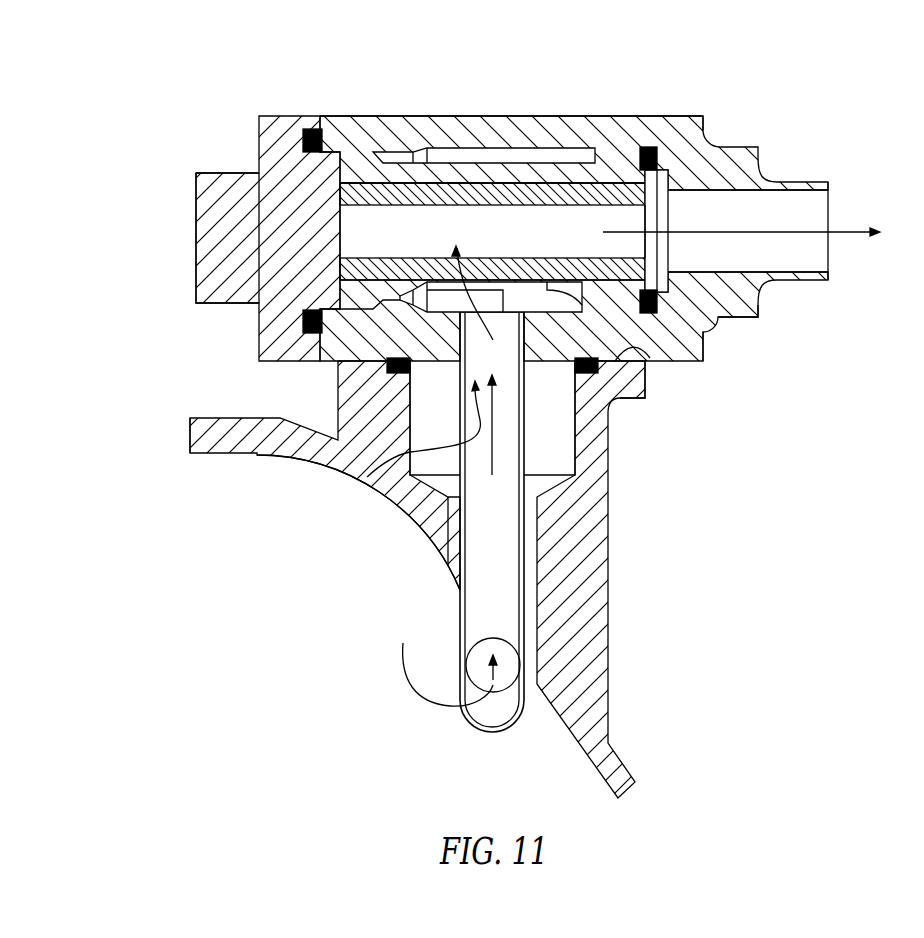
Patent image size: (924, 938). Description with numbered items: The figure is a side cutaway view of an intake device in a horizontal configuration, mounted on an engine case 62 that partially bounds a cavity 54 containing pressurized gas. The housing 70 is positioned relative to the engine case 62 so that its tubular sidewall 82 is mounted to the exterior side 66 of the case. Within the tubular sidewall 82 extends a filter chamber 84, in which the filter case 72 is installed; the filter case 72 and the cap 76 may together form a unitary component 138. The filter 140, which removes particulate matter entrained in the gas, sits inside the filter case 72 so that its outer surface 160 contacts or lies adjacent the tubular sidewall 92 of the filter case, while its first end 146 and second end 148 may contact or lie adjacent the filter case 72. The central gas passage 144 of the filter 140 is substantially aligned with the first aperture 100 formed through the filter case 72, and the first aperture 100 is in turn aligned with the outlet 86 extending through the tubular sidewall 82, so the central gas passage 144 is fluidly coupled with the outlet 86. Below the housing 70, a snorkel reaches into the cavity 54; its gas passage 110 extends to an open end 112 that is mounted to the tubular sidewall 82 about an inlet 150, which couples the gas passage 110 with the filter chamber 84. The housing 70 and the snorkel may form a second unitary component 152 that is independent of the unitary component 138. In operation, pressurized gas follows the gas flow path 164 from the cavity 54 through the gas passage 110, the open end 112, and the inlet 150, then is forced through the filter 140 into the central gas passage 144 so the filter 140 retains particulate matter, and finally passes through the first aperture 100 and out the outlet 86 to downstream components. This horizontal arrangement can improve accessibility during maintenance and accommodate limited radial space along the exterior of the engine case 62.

The cavity 54 is at (244, 639).
The engine case 62 is at (637, 538).
The exterior side 66 is at (645, 363).
The housing 70 is at (459, 106).
The filter case 72 is at (613, 150).
The cap 76 is at (283, 140).
The tubular sidewall 82 is at (573, 133).
The filter chamber 84 is at (705, 330).
The outlet 86 is at (800, 213).
The tubular sidewall 92 is at (703, 360).
The first aperture 100 is at (648, 218).
The gas passage 110 is at (473, 527).
The open end 112 is at (367, 477).
The unitary component 138 is at (237, 157).
The filter 140 is at (410, 196).
The central gas passage 144 is at (480, 246).
The first end 146 is at (327, 267).
The second end 148 is at (680, 172).
The inlet 150 is at (410, 402).
The second unitary component 152 is at (540, 396).
The outer surface 160 is at (313, 335).
The gas flow path 164 is at (564, 226).